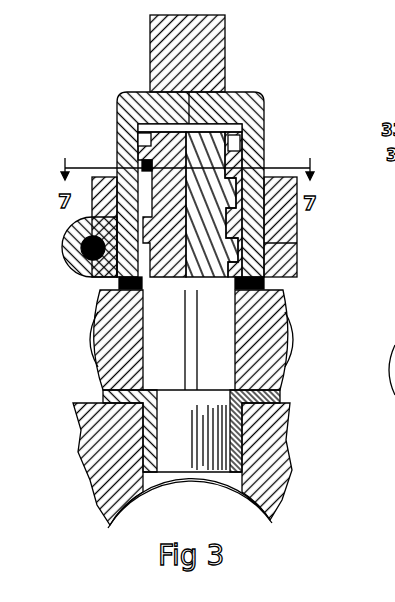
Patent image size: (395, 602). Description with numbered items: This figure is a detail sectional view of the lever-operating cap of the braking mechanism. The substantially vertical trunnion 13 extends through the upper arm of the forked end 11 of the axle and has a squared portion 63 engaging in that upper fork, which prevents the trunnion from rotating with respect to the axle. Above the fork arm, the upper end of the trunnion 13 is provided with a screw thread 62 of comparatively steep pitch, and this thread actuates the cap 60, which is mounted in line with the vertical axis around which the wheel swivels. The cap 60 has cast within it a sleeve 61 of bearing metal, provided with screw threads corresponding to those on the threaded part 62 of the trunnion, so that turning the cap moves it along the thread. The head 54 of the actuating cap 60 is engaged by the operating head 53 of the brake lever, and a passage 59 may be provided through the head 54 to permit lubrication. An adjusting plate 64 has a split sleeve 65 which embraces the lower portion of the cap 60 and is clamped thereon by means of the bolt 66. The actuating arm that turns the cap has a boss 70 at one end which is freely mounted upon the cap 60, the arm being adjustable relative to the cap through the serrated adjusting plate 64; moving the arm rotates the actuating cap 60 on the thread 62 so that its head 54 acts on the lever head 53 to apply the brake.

The operating head 53 is at (205, 48).
The head 54 is at (240, 96).
The passage 59 is at (190, 123).
The actuating cap 60 is at (264, 132).
The sleeve 61 is at (264, 152).
The boss 70 is at (270, 208).
The adjusting plate 64 is at (272, 243).
The split sleeve 65 is at (78, 231).
The bolt 66 is at (85, 253).
The screw thread 62 is at (115, 290).
The squared portion 63 is at (277, 290).
The forked end 11 is at (205, 338).
The trunnion 13 is at (185, 433).